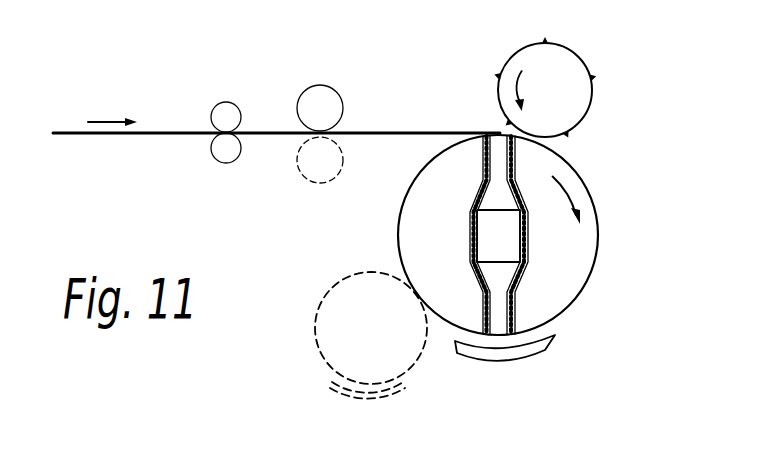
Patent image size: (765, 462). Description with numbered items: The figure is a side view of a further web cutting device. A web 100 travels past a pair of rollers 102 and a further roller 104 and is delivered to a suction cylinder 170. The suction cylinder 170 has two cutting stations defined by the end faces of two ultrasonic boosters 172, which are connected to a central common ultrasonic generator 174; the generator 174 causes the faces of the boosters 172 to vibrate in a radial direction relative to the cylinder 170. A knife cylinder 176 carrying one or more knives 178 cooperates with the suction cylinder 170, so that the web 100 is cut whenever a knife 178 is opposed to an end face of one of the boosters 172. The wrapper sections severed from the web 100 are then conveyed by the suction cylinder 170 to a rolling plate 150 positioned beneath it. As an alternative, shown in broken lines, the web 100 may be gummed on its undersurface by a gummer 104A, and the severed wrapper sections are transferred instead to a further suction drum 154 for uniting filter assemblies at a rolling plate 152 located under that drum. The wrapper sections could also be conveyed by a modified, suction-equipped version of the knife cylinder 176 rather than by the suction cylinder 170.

The web 100 is at (158, 138).
The nip rollers 102 is at (225, 102).
The roller 104 is at (332, 105).
The gummer 104A is at (293, 163).
The rolling plate 150 is at (537, 352).
The rolling plate 152 is at (373, 405).
The further suction drum 154 is at (317, 341).
The suction cylinder 170 is at (583, 238).
The ultrasonic boosters 172 is at (492, 180).
The central common ultrasonic generator 174 is at (490, 230).
The knife cylinder 176 is at (568, 108).
The knives 178 is at (545, 42).